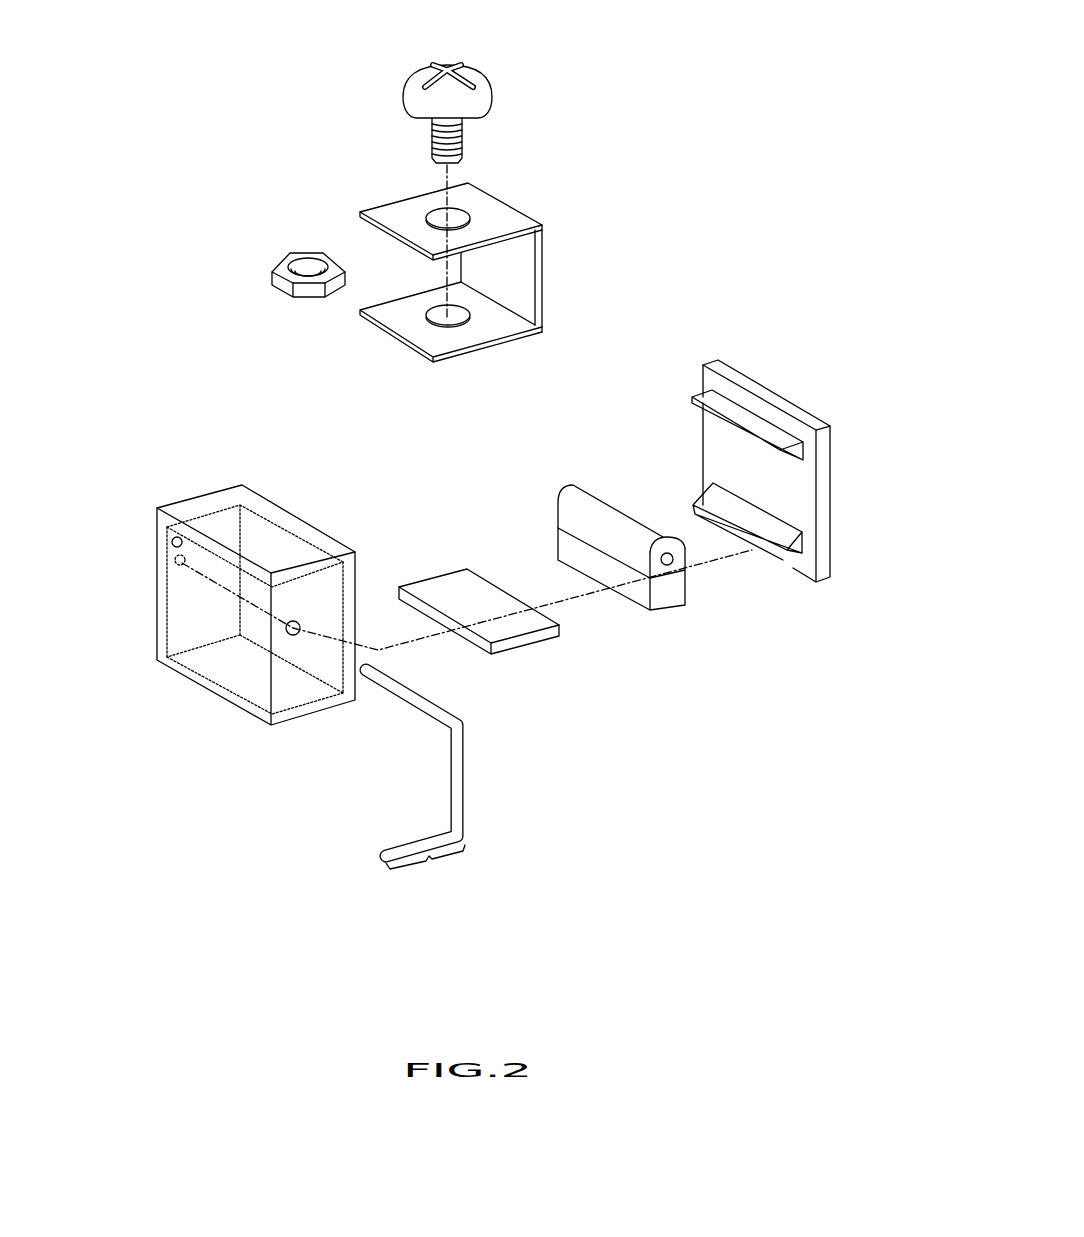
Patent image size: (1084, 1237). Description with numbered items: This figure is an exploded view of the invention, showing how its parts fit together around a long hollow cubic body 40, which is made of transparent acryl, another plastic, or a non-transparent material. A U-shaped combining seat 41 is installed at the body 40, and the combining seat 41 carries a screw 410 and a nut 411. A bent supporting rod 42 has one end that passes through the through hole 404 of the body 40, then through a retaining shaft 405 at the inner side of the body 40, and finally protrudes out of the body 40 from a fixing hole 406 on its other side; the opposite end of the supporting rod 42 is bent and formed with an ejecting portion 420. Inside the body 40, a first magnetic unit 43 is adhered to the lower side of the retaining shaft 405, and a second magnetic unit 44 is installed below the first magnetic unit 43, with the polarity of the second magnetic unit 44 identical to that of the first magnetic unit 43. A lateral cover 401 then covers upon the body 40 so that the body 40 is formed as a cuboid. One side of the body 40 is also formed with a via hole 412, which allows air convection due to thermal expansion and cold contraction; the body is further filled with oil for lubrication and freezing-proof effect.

The body 40 is at (214, 602).
The combining seat 41 is at (495, 218).
The supporting rod 42 is at (472, 785).
The first magnetic unit 43 is at (652, 539).
The second magnetic unit 44 is at (532, 637).
The lateral cover 401 is at (823, 507).
The through hole 404 is at (295, 634).
The retaining shaft 405 is at (585, 513).
The fixing hole 406 is at (180, 564).
The screw 410 is at (473, 78).
The nut 411 is at (298, 255).
The via hole 412 is at (172, 542).
The ejecting portion 420 is at (425, 872).